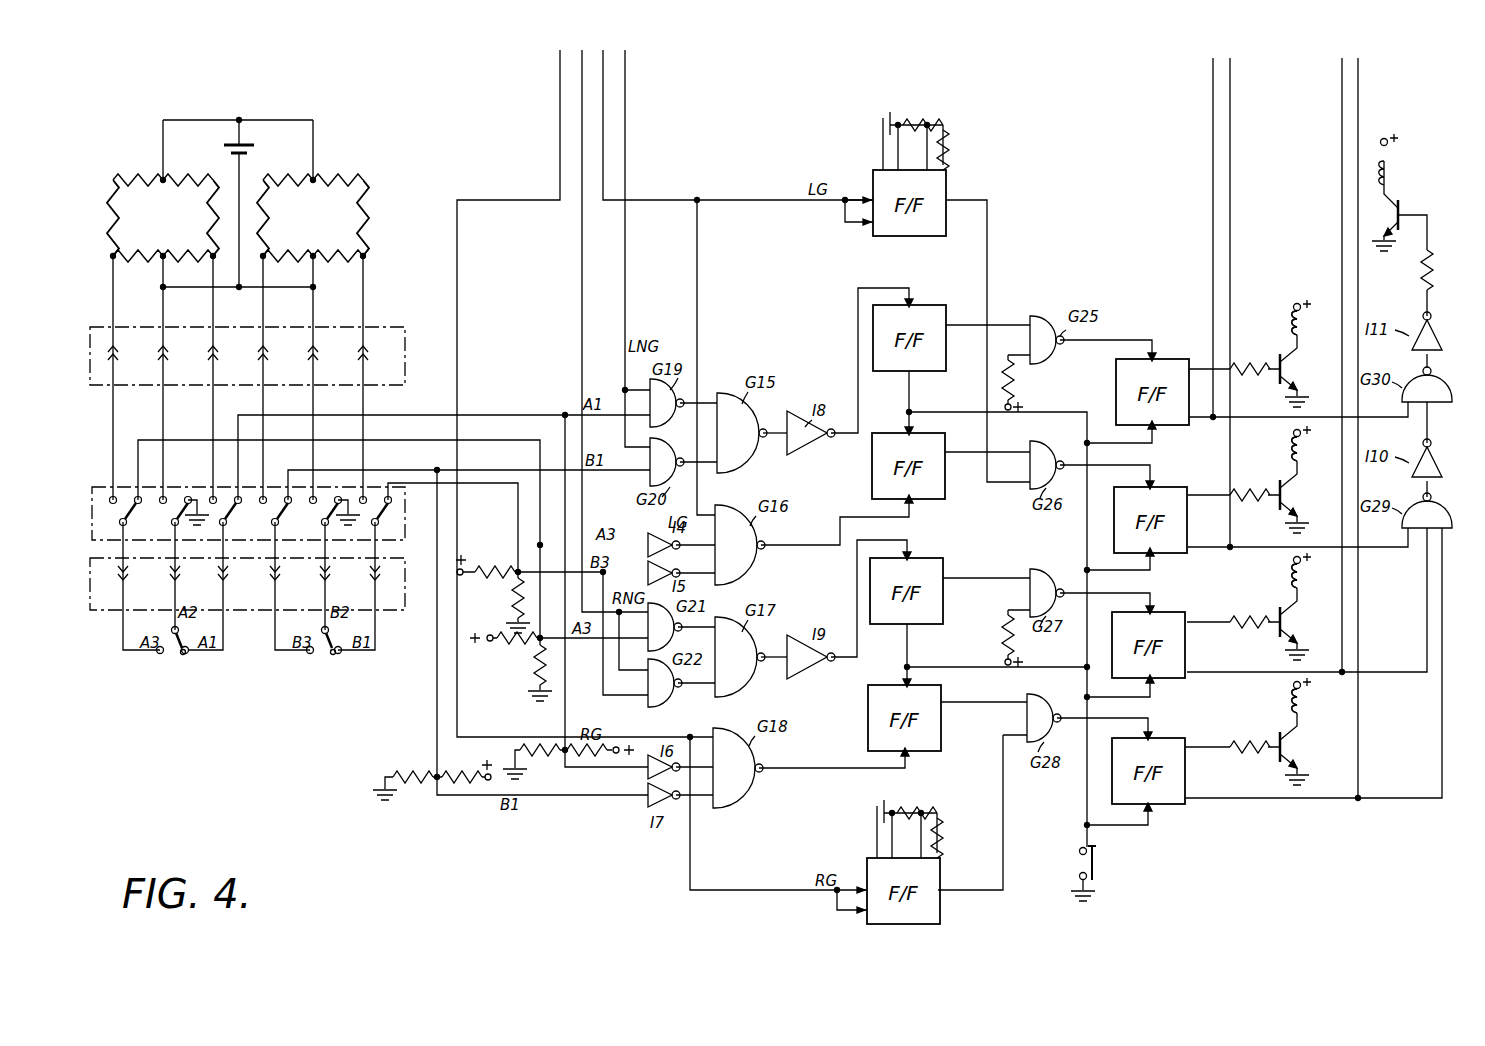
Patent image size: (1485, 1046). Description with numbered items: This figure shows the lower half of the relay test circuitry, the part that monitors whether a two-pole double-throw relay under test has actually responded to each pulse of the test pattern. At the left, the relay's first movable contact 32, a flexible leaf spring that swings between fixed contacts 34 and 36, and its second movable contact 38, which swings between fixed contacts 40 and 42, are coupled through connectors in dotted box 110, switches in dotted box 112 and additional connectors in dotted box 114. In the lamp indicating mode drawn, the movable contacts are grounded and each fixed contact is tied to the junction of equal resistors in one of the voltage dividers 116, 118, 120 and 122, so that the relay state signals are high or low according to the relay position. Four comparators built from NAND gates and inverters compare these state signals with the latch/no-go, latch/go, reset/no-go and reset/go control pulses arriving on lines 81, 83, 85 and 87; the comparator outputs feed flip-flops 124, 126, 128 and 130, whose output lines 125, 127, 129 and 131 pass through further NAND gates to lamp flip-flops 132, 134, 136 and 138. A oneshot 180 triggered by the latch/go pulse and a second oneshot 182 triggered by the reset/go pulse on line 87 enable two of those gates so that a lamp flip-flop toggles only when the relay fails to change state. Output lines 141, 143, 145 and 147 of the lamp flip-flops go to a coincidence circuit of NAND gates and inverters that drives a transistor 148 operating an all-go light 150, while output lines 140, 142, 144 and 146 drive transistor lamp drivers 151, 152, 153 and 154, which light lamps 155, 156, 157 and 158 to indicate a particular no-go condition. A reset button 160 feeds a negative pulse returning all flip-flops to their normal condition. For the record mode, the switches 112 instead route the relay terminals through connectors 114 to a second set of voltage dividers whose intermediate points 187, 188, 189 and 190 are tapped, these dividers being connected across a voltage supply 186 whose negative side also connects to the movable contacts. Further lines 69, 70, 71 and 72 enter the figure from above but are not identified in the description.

The flexible leaf spring 32 is at (180, 656).
The fixed contact 34 is at (190, 652).
The fixed contact 36 is at (155, 655).
The second leaf spring type movable contact 38 is at (330, 656).
The first fixed contact 40 is at (305, 655).
The second fixed contact 42 is at (342, 652).
The output line 69 is at (1358, 90).
The output line 70 is at (1342, 88).
The output line 71 is at (1230, 115).
The output line 72 is at (1213, 117).
The line 81 is at (625, 95).
The line 83 is at (640, 198).
The line 85 is at (582, 225).
The line 87 is at (560, 118).
The connectors 110 is at (90, 610).
The switches 112 is at (170, 487).
The additional connectors 114 is at (375, 327).
The voltage divider 116 is at (560, 760).
The voltage divider 118 is at (417, 760).
The voltage divider 120 is at (514, 662).
The voltage divider 122 is at (494, 589).
The flip-flop 124 is at (920, 305).
The output line 125 is at (995, 325).
The flip-flop 126 is at (930, 499).
The output line 127 is at (1000, 452).
The flip-flop 128 is at (918, 558).
The output line 129 is at (975, 578).
The flip-flop 130 is at (925, 751).
The output line 131 is at (965, 702).
The lamp flip-flop 132 is at (1116, 375).
The lamp flip-flop 134 is at (1160, 487).
The lamp flip-flop 136 is at (1160, 612).
The lamp flip-flop 138 is at (1160, 738).
The output line 140 is at (1238, 375).
The output line 141 is at (1258, 402).
The output line 142 is at (1238, 501).
The output line 143 is at (1263, 551).
The output line 144 is at (1205, 628).
The output line 145 is at (1200, 678).
The output line 146 is at (1200, 753).
The output line 147 is at (1205, 803).
The transistor 148 is at (1412, 208).
The all go light 150 is at (1388, 170).
The transistor lamp driver 151 is at (1270, 362).
The transistor lamp driver 152 is at (1270, 488).
The transistor lamp driver 153 is at (1270, 615).
The transistor lamp driver 154 is at (1270, 740).
The lamp 155 is at (1291, 328).
The lamp 156 is at (1291, 454).
The lamp 157 is at (1294, 581).
The lamp 158 is at (1294, 706).
The reset button 160 is at (1098, 872).
The oneshot 180 is at (948, 182).
The second oneshot 182 is at (940, 915).
The voltage supply 186 is at (250, 150).
The intermediate point 187 is at (208, 240).
The intermediate point 188 is at (120, 240).
The intermediate point 189 is at (268, 240).
The intermediate point 190 is at (360, 240).